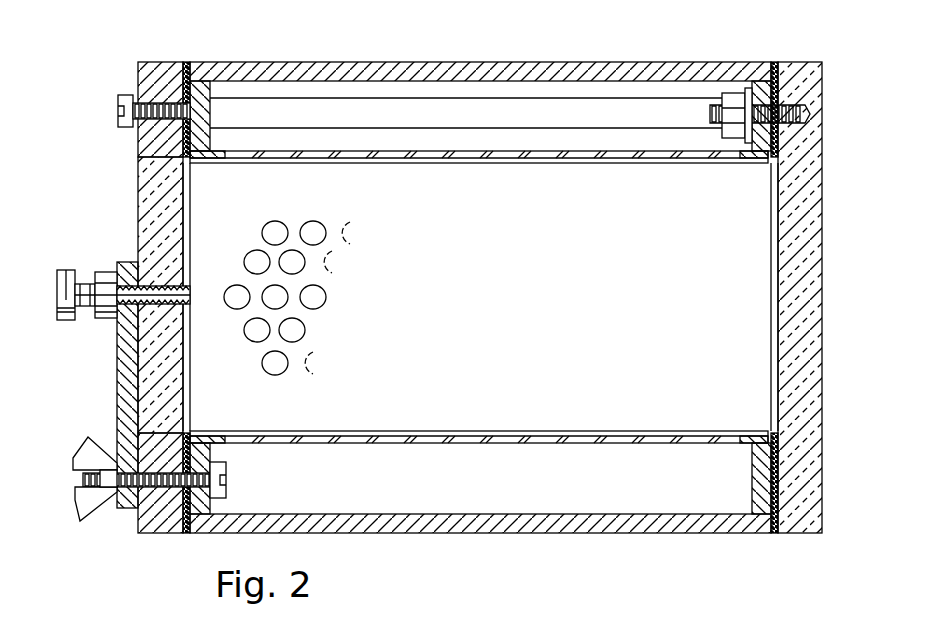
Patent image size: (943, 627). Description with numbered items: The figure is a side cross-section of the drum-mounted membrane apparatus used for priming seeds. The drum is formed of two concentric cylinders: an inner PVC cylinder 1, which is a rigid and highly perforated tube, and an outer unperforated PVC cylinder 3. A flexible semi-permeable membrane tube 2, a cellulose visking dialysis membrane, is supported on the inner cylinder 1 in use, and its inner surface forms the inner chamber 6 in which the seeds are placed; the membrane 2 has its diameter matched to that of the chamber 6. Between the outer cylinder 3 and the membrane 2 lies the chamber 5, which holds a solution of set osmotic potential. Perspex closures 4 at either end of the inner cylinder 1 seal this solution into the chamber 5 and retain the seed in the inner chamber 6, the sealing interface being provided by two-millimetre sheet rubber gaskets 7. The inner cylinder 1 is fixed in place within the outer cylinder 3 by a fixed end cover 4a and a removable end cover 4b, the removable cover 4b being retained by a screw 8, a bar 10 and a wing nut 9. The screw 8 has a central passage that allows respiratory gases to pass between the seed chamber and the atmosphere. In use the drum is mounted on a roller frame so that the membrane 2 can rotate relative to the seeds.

The inner PVC cylinder 1 is at (633, 150).
The membrane tube 2 is at (652, 165).
The outer cylinder 3 is at (378, 62).
The closures 4 is at (800, 285).
The fixed end cover 4a is at (140, 78).
The removable end cover 4b is at (142, 212).
The chamber 5 is at (616, 495).
The inner chamber 6 is at (537, 309).
The rubber gaskets 7 is at (186, 62).
The screw 8 is at (68, 280).
The wing nut 9 is at (90, 447).
The bar 10 is at (120, 362).